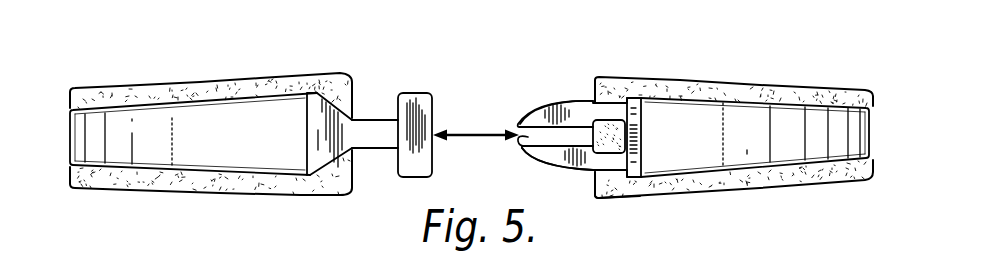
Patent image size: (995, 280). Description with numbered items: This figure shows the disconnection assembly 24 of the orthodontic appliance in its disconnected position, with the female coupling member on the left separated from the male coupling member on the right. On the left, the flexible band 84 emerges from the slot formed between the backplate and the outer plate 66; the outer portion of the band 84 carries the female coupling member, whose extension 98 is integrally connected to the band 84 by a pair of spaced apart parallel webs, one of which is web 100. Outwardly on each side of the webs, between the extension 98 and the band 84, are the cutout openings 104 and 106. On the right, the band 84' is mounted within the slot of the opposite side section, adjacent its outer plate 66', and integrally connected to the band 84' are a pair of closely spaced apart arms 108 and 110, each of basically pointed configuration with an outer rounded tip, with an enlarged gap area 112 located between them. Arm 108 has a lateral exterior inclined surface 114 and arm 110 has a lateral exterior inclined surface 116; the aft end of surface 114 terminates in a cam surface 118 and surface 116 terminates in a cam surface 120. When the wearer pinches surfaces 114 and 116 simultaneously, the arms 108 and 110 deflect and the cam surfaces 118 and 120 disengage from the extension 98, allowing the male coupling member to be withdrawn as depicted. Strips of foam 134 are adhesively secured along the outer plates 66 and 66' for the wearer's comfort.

The disconnection assembly 24 is at (567, 76).
The outer plate 66 is at (193, 168).
The outer plate 66' is at (755, 169).
The flexible band 84 is at (330, 163).
The band 84' is at (670, 111).
The extension 98 is at (412, 107).
The web 100 is at (372, 126).
The cutout opening 104 is at (385, 117).
The cutout opening 106 is at (383, 150).
The arm 108 is at (558, 101).
The arm 110 is at (577, 167).
The enlarged gap area 112 is at (517, 137).
The lateral exterior inclined surface 114 is at (538, 108).
The lateral exterior inclined surface 116 is at (545, 168).
The cam surface 118 is at (603, 96).
The cam surface 120 is at (592, 171).
The strips of foam 134 is at (180, 85).